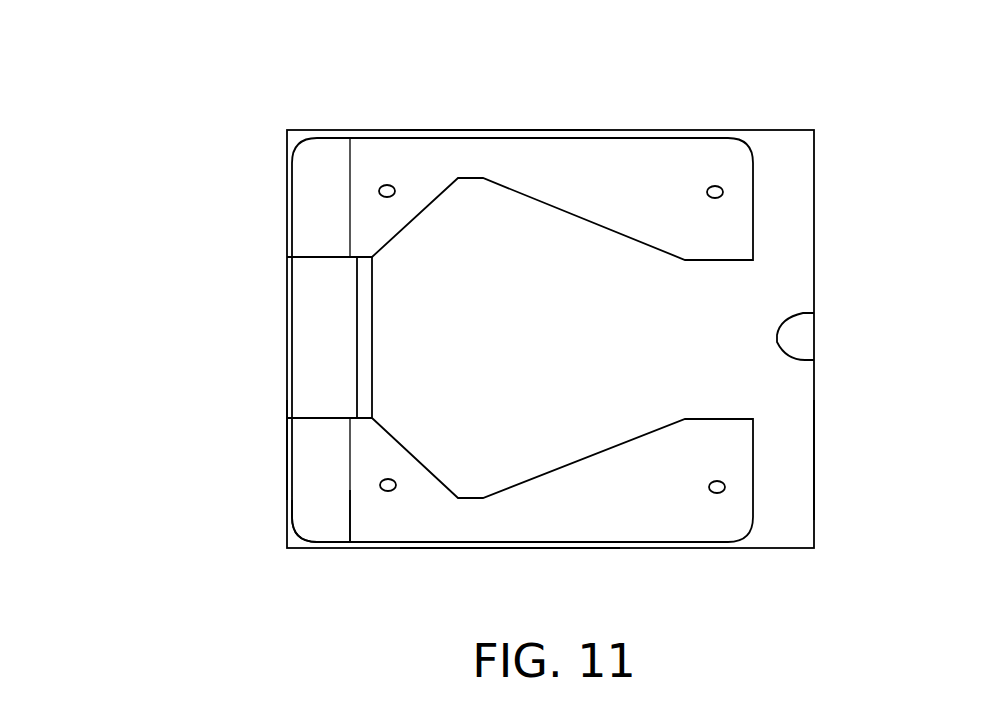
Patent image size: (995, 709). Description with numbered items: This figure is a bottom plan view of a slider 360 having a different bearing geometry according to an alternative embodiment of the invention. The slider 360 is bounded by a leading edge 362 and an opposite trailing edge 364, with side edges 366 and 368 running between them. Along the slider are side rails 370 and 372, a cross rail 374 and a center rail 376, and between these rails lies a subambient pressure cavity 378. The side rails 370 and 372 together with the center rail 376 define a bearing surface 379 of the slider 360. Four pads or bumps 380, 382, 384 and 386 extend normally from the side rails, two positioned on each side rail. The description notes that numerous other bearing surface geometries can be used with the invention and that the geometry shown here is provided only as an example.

The slider 360 is at (178, 414).
The leading edge 362 is at (287, 452).
The trailing edge 364 is at (816, 468).
The side edge 366 is at (510, 549).
The side edge 368 is at (486, 128).
The side rail 370 is at (385, 512).
The side rail 372 is at (383, 168).
The cross rail 374 is at (335, 345).
The center rail 376 is at (800, 335).
The subambient pressure cavity 378 is at (578, 335).
The bearing surface 379 is at (644, 176).
The pad 380 is at (388, 478).
The pad 382 is at (713, 480).
The pad 384 is at (389, 197).
The pad 386 is at (706, 195).